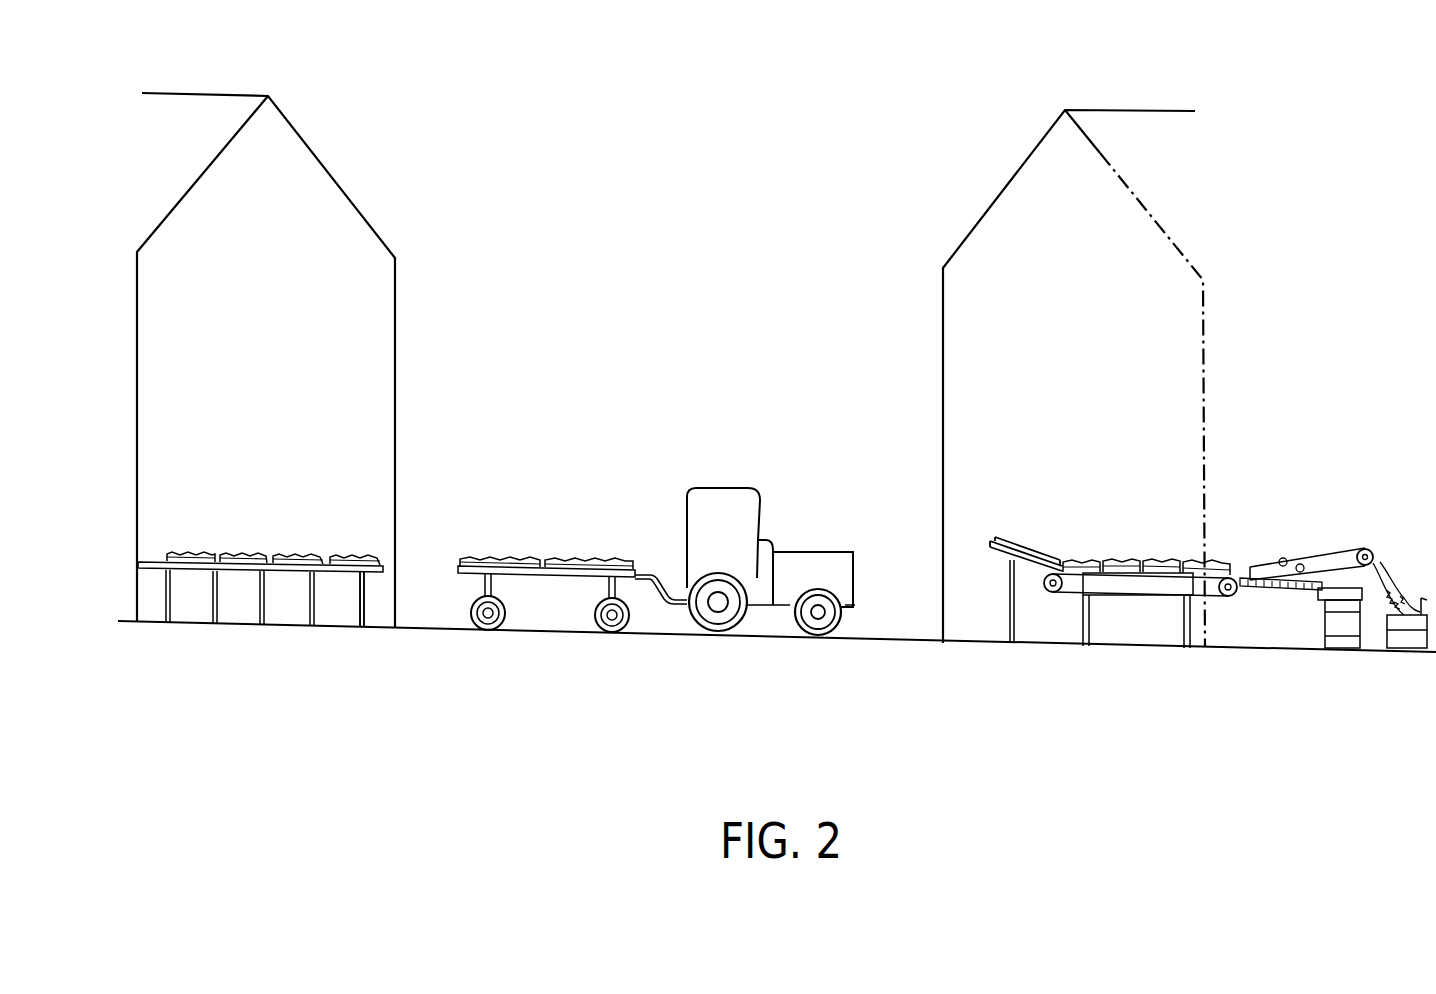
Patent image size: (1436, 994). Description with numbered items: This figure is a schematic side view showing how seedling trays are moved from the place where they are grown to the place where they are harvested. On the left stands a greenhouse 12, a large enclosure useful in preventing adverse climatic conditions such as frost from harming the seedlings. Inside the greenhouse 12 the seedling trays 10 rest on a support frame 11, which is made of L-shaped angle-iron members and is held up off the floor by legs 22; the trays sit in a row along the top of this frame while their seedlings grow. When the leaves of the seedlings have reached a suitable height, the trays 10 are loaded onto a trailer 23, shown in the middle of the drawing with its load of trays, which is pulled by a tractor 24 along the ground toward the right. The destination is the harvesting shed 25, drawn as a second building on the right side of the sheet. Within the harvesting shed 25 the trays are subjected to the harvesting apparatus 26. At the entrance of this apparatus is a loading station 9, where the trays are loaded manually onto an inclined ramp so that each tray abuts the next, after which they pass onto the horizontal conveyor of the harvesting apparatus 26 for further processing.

The loading station 9 is at (976, 538).
The seedling tray 10 is at (258, 552).
The support frame 11 is at (229, 603).
The greenhouse 12 is at (288, 194).
The legs 22 is at (367, 603).
The trailer 23 is at (543, 576).
The tractor 24 is at (720, 527).
The harvesting shed 25 is at (1078, 211).
The harvesting apparatus 26 is at (1250, 603).